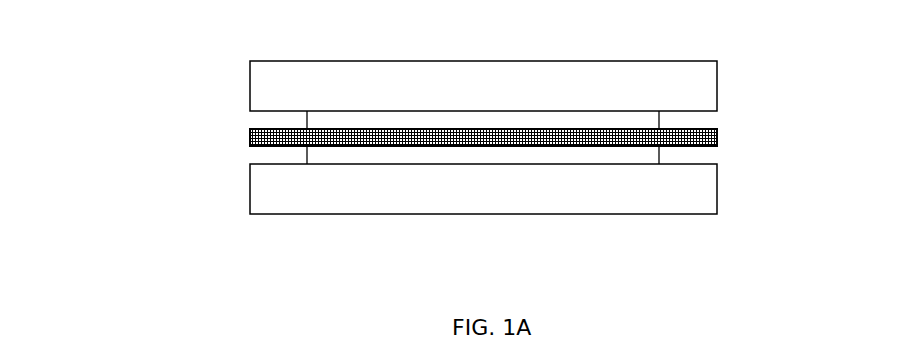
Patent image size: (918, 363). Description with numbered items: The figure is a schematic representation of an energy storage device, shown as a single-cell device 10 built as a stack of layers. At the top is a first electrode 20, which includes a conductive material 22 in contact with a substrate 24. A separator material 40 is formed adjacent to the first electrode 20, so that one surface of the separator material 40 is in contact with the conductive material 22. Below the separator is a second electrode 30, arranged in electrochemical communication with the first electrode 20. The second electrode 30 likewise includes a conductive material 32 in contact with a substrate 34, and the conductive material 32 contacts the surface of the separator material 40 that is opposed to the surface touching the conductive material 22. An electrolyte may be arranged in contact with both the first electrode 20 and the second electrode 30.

The single-cell device 10 is at (439, 154).
The first electrode 20 is at (469, 85).
The conductive material 22 is at (307, 122).
The substrate 24 is at (250, 83).
The second electrode 30 is at (469, 202).
The conductive material 32 is at (307, 155).
The substrate 34 is at (250, 200).
The separator material 40 is at (718, 139).